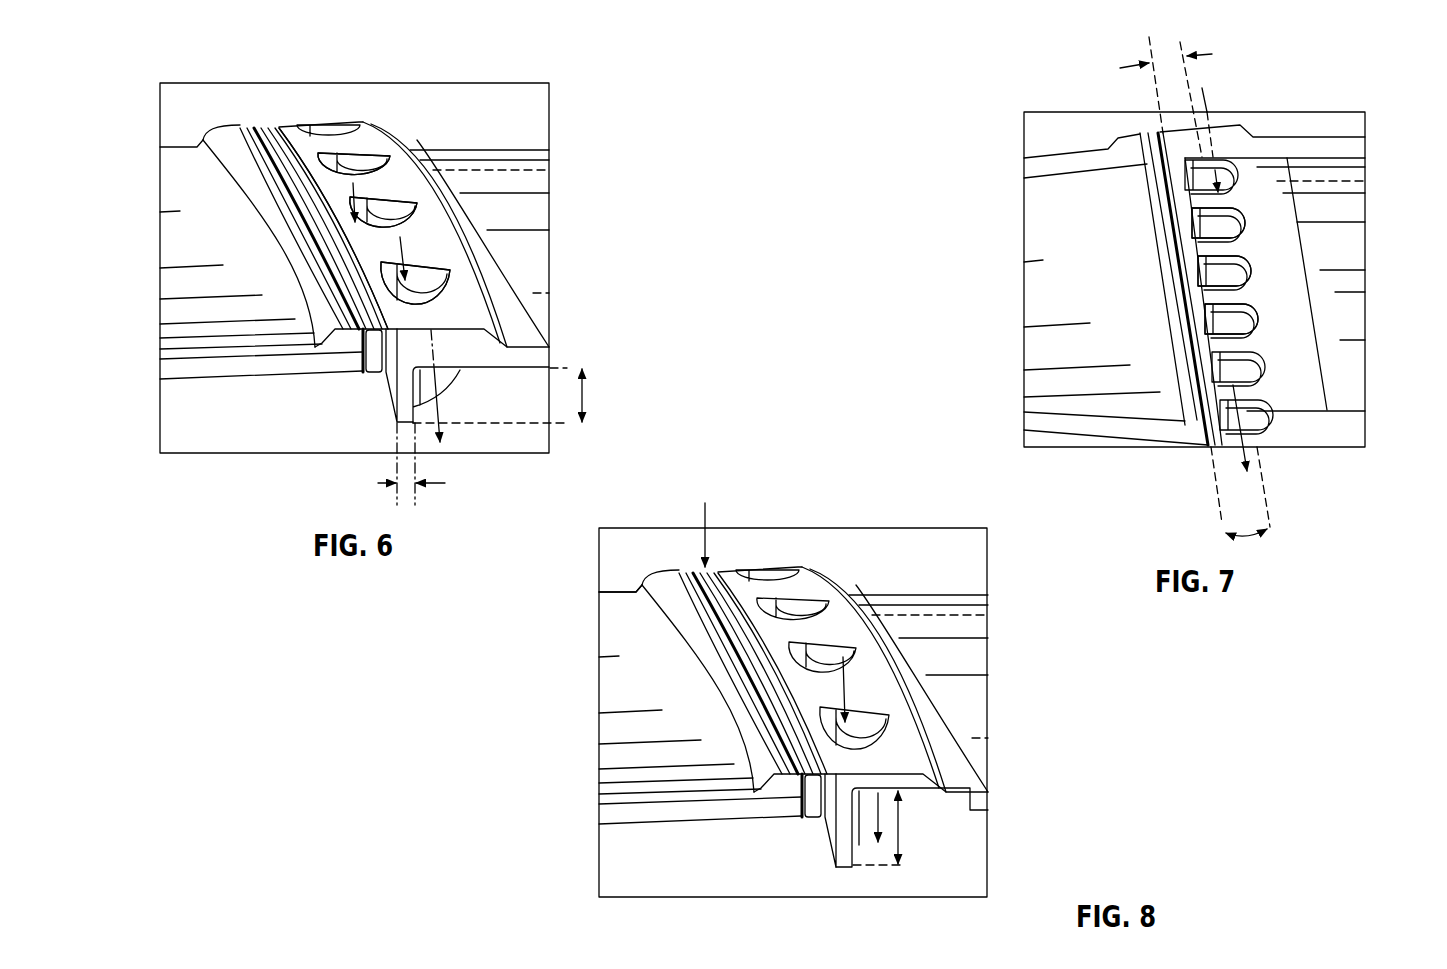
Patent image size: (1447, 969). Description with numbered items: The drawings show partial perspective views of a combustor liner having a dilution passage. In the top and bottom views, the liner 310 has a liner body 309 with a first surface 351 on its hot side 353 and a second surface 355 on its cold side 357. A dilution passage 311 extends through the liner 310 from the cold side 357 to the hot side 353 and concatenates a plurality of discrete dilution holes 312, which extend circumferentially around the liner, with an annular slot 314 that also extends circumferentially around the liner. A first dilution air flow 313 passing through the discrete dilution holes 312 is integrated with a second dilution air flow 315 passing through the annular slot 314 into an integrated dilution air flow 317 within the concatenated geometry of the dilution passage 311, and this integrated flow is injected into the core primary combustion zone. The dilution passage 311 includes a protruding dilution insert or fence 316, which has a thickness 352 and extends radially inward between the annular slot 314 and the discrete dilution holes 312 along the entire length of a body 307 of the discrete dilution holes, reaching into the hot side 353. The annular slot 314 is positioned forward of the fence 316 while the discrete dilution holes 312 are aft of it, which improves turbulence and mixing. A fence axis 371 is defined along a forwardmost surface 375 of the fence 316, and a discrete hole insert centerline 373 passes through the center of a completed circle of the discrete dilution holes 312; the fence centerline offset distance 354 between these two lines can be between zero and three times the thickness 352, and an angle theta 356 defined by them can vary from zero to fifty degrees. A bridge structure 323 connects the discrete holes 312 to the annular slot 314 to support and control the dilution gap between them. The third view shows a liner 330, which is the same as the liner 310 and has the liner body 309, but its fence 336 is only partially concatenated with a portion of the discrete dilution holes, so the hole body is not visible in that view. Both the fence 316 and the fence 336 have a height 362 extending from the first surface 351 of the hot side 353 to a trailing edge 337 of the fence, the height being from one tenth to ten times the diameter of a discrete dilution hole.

In FIG. 6, the body of the discrete dilution holes 307 is at (460, 373).
In FIG. 7, the body of the discrete dilution holes 307 is at (1227, 195).
In FIG. 6, the liner body 309 is at (168, 152).
In FIG. 7, the liner body 309 is at (1357, 145).
In FIG. 8, the liner body 309 is at (617, 590).
In FIG. 6, the liner 310 is at (180, 240).
In FIG. 7, the liner 310 is at (1037, 230).
In FIG. 6, the dilution passage 311 is at (310, 106).
In FIG. 7, the dilution passage 311 is at (1146, 442).
In FIG. 6, the discrete dilution holes 312 is at (358, 158).
In FIG. 7, the discrete dilution holes 312 is at (1230, 264).
In FIG. 6, the first dilution air flow 313 is at (413, 253).
In FIG. 7, the first dilution air flow 313 is at (1207, 103).
In FIG. 6, the annular slot 314 is at (265, 122).
In FIG. 7, the annular slot 314 is at (1184, 322).
In FIG. 6, the second dilution air flow 315 is at (400, 167).
In FIG. 7, the second dilution air flow 315 is at (1154, 128).
In FIG. 6, the fence 316 is at (397, 415).
In FIG. 7, the fence 316 is at (1262, 310).
In FIG. 6, the integrated dilution air flow 317 is at (443, 413).
In FIG. 7, the integrated dilution air flow 317 is at (1233, 453).
In FIG. 6, the bridge structure 323 is at (365, 348).
In FIG. 8, the bridge structure 323 is at (807, 792).
In FIG. 8, the liner 330 is at (968, 660).
In FIG. 8, the fence 336 is at (833, 832).
In FIG. 8, the trailing edge 337 is at (847, 868).
In FIG. 6, the first surface 351 is at (175, 380).
In FIG. 7, the first surface 351 is at (1347, 160).
In FIG. 6, the thickness 352 is at (433, 487).
In FIG. 6, the hot side 353 is at (233, 435).
In FIG. 7, the hot side 353 is at (1361, 443).
In FIG. 7, the fence centerline offset distance 354 is at (1143, 63).
In FIG. 6, the second surface 355 is at (175, 182).
In FIG. 7, the second surface 355 is at (1310, 133).
In FIG. 7, the angle theta 356 is at (1273, 535).
In FIG. 6, the cold side 357 is at (212, 121).
In FIG. 7, the cold side 357 is at (1075, 145).
In FIG. 6, the height 362 is at (585, 400).
In FIG. 8, the height 362 is at (905, 832).
In FIG. 7, the fence axis 371 is at (1143, 42).
In FIG. 7, the discrete hole insert centerline 373 is at (1190, 86).
In FIG. 6, the forwardmost surface 375 is at (382, 380).